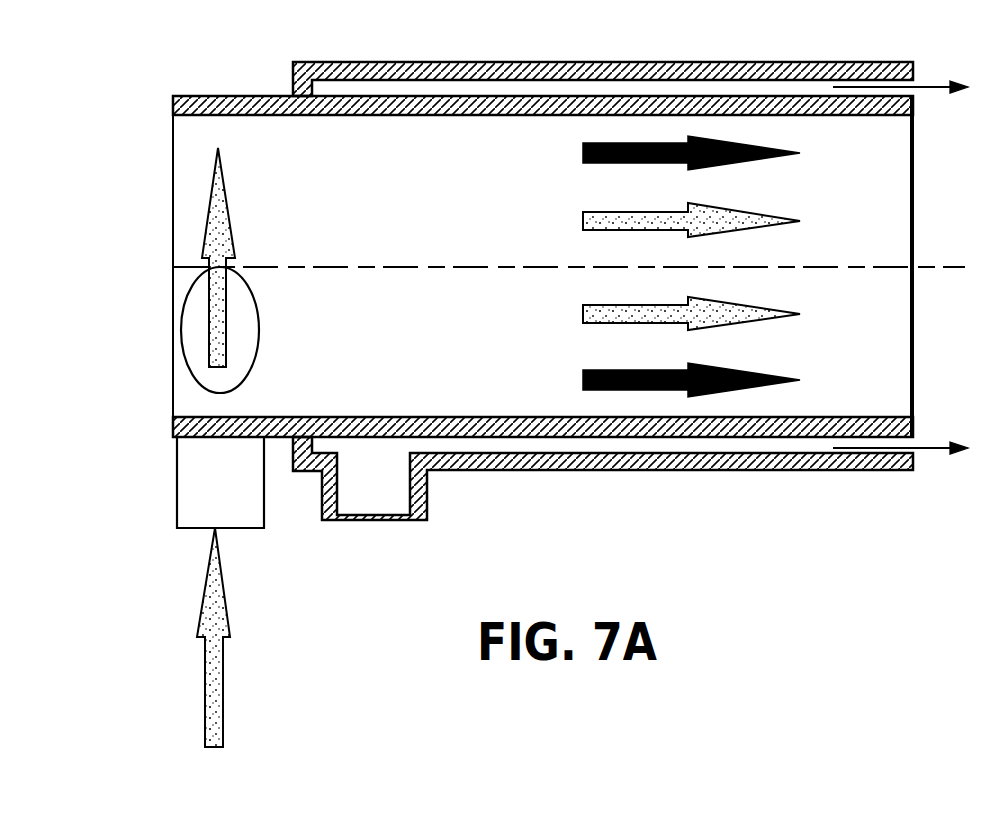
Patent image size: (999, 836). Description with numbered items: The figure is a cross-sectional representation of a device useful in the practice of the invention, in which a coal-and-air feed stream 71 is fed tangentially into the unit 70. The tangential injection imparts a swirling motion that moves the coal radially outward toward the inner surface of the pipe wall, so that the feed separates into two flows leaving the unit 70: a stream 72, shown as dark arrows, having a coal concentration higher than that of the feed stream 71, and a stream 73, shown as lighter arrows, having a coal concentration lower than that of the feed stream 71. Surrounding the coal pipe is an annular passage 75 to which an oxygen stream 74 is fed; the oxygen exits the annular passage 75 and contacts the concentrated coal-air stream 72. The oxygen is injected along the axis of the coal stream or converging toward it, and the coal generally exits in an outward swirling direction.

The unit 70 is at (525, 43).
The feed stream 71 is at (220, 447).
The concentrated coal-air stream 72 is at (708, 267).
The lower-concentration coal stream 73 is at (708, 267).
The oxygen stream 74 is at (915, 271).
The annular passage 75 is at (727, 445).